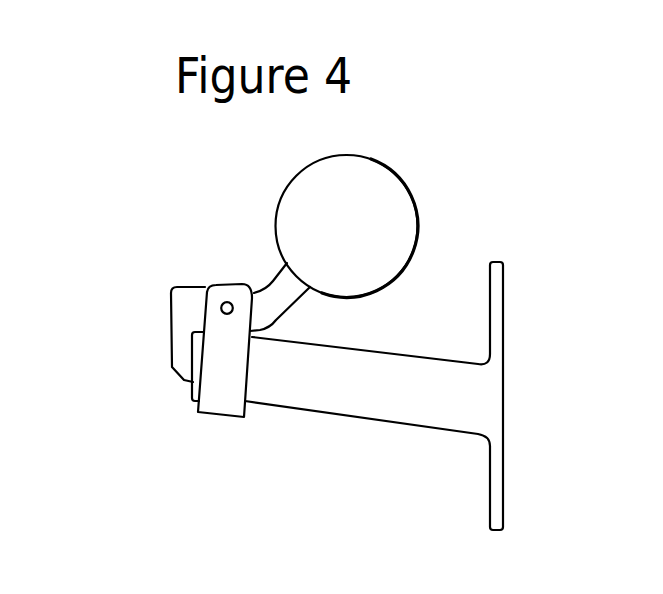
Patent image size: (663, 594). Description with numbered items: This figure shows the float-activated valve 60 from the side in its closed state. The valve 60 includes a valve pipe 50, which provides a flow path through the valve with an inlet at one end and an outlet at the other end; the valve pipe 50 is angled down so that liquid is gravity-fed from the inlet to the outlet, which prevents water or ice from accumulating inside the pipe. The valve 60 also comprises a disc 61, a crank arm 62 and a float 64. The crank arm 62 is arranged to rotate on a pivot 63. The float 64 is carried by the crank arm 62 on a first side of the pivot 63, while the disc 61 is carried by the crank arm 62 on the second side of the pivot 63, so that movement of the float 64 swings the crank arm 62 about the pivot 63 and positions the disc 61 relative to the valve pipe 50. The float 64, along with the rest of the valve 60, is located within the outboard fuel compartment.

The valve pipe 50 is at (353, 395).
The float-activated valve 60 is at (246, 283).
The disc 61 is at (188, 388).
The crank arm 62 is at (187, 320).
The pivot 63 is at (223, 303).
The float 64 is at (367, 210).